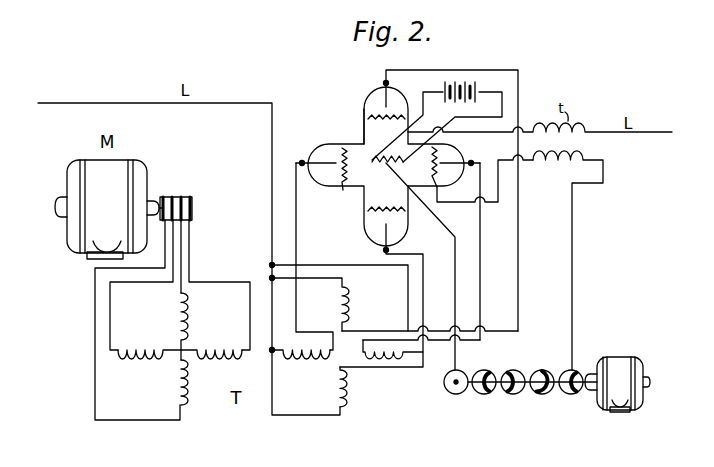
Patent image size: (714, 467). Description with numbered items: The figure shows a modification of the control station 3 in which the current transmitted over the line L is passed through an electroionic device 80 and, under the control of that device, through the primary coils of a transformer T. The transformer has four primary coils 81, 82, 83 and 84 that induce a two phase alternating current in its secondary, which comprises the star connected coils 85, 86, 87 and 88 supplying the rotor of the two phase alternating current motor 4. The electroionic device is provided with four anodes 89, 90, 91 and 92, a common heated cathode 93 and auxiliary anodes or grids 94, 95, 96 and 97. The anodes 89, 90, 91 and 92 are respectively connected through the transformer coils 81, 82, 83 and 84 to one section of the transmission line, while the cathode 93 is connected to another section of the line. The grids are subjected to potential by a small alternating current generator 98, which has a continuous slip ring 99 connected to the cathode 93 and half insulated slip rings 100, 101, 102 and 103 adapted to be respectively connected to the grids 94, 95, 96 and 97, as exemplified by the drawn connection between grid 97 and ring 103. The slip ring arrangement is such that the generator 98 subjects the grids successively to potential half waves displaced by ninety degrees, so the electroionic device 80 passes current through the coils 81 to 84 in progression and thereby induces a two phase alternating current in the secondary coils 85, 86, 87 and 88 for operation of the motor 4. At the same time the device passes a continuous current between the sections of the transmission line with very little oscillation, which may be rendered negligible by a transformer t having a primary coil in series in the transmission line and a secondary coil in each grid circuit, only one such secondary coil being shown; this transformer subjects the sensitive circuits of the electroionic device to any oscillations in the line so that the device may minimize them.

The control station 3 is at (380, 152).
The two phase alternating current motor M4 4 is at (115, 164).
The electroionic device 80 is at (362, 109).
The primary coil 81 is at (357, 307).
The primary coil 82 is at (320, 361).
The primary coil 83 is at (356, 389).
The primary coil 84 is at (391, 360).
The star connected secondary coil 85 is at (186, 320).
The star connected secondary coil 86 is at (151, 344).
The star connected secondary coil 87 is at (171, 386).
The star connected secondary coil 88 is at (208, 355).
The anode 89 is at (383, 97).
The anode 90 is at (317, 158).
The anode 91 is at (384, 230).
The anode 92 is at (453, 163).
The common heated cathode 93 is at (374, 168).
The auxiliary anode or grid 94 is at (367, 119).
The auxiliary anode or grid 95 is at (343, 189).
The auxiliary anode or grid 96 is at (367, 213).
The auxiliary anode or grid 97 is at (432, 198).
The small alternating current generator 98 is at (628, 361).
The continuous slip ring 99 is at (456, 395).
The half insulated slip ring 100 is at (489, 394).
The half insulated slip ring 101 is at (507, 394).
The half insulated slip ring 102 is at (537, 394).
The half insulated slip ring 103 is at (571, 395).